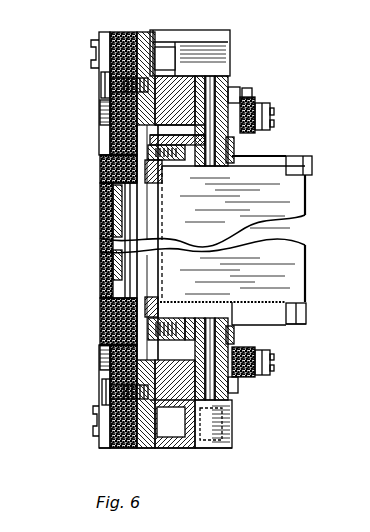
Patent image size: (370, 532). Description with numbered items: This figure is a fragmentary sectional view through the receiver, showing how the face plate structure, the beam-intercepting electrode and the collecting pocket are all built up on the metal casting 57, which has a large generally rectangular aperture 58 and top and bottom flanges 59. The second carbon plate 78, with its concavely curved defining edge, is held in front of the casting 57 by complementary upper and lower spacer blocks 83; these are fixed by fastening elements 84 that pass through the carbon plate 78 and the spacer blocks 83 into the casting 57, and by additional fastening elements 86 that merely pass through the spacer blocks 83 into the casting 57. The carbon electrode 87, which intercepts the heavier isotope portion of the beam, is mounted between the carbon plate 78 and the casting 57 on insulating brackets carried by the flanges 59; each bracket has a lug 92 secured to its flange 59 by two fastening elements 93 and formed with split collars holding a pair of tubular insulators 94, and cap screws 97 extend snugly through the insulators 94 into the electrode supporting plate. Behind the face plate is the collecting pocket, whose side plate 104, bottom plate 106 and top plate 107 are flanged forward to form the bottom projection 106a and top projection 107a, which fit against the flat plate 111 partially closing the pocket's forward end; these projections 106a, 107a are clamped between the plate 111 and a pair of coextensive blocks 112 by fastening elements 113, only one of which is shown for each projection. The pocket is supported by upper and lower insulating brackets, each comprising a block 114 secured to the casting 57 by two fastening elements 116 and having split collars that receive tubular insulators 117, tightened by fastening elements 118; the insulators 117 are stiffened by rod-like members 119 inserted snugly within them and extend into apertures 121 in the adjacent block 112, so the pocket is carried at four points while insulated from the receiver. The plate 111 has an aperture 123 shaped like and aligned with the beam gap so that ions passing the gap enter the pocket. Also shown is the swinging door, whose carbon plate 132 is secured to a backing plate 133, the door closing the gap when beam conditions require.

The metal casting 57 is at (163, 46).
The aperture 58 is at (136, 133).
The top and bottom flanges 59 is at (146, 33).
The second carbon plate 78 is at (99, 33).
The spacer blocks 83 is at (110, 33).
The fastening elements 84 is at (90, 48).
The additional fastening elements 86 is at (101, 82).
The carbon electrode 87 is at (128, 193).
The lug 92 is at (229, 34).
The fastening elements 93 is at (197, 40).
The tubular insulators 94 is at (272, 108).
The cap screws 97 is at (272, 123).
The side plate 104 is at (310, 196).
The bottom plate 106 is at (302, 308).
The bottom projection 106a is at (103, 313).
The top plate 107 is at (313, 167).
The top projection 107a is at (100, 173).
The flat plate 111 is at (150, 288).
The blocks 112 is at (232, 152).
The fastening elements 113 is at (110, 163).
The block 114 is at (228, 78).
The fastening elements 116 is at (100, 108).
The tubular insulators 117 is at (232, 82).
The fastening elements 118 is at (236, 93).
The rod-like members 119 is at (247, 100).
The apertures 121 is at (262, 156).
The aperture 123 is at (152, 272).
The carbon plate 132 is at (101, 218).
The backing plate 133 is at (101, 238).